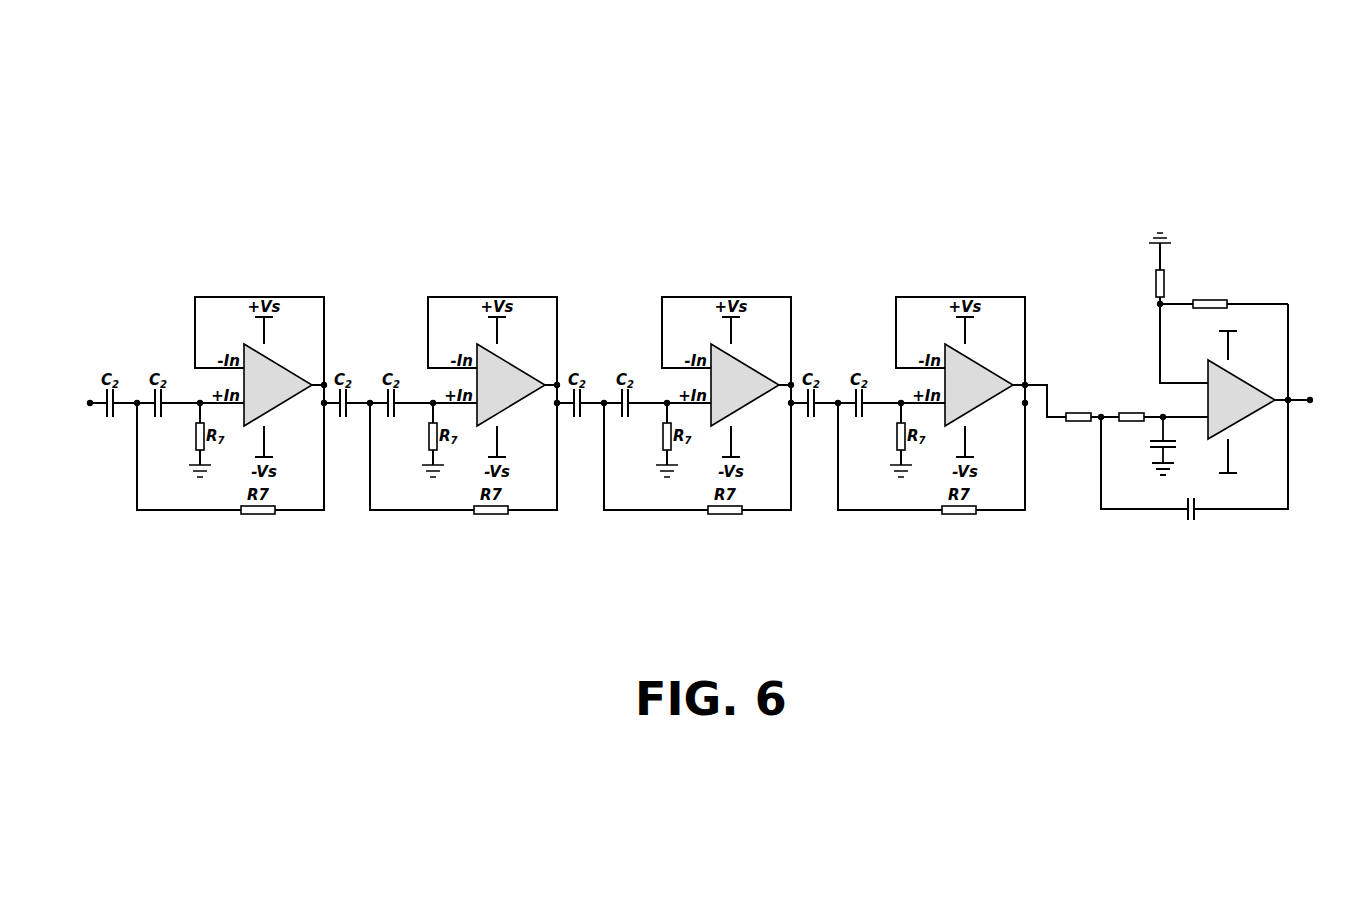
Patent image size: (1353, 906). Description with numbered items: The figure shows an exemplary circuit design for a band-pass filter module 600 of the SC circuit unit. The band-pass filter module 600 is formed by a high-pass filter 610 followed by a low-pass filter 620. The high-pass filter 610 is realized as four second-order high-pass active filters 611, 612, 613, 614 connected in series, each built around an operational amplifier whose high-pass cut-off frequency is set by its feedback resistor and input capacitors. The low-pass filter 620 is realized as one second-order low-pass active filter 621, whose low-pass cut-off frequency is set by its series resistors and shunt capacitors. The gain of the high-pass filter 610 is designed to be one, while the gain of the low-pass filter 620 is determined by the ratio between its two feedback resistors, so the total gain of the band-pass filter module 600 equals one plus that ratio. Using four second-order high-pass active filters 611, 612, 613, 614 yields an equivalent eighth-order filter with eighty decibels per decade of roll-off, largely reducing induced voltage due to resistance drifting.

The band-pass filter module 600 is at (1078, 603).
The high-pass filter 610 is at (1048, 132).
The second-order high-pass active filter 611 is at (220, 193).
The second-order high-pass active filter 612 is at (448, 191).
The second-order high-pass active filter 613 is at (691, 191).
The second-order high-pass active filter 614 is at (915, 191).
The low-pass filter 620 is at (1336, 130).
The second-order low-pass active filter 621 is at (1213, 195).